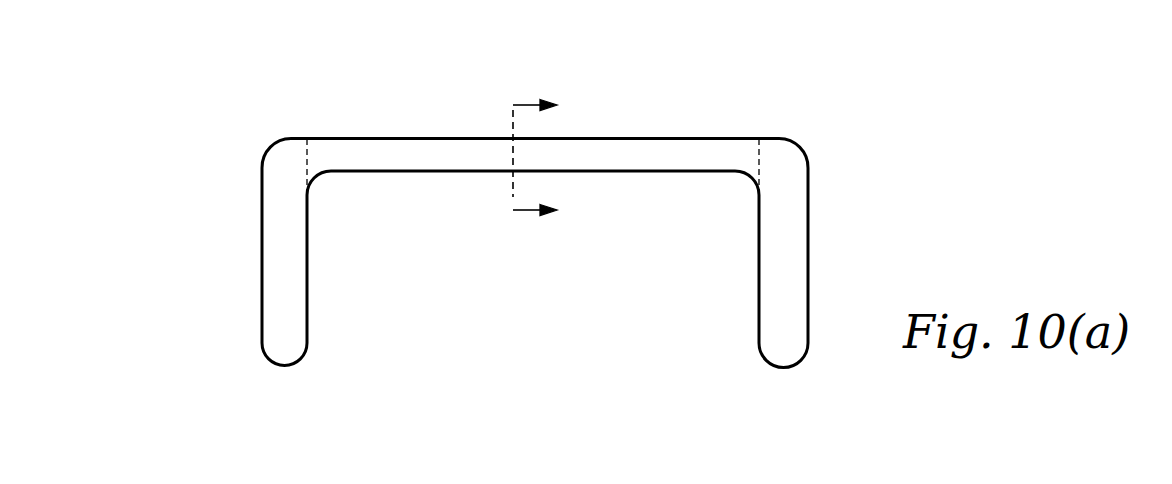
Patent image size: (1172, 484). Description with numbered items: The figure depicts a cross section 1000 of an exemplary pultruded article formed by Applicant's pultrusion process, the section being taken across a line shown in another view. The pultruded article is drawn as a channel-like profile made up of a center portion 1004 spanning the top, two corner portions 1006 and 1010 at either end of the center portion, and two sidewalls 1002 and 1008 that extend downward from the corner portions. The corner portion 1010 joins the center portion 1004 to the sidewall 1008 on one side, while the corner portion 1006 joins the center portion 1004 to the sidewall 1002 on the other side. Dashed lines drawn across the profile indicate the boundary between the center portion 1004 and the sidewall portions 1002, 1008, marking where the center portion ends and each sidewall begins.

The cross section 1000 is at (718, 87).
The sidewall 1002 is at (790, 355).
The center portion 1004 is at (460, 150).
The corner portion 1006 is at (782, 113).
The sidewall 1008 is at (280, 358).
The corner portion 1010 is at (287, 108).